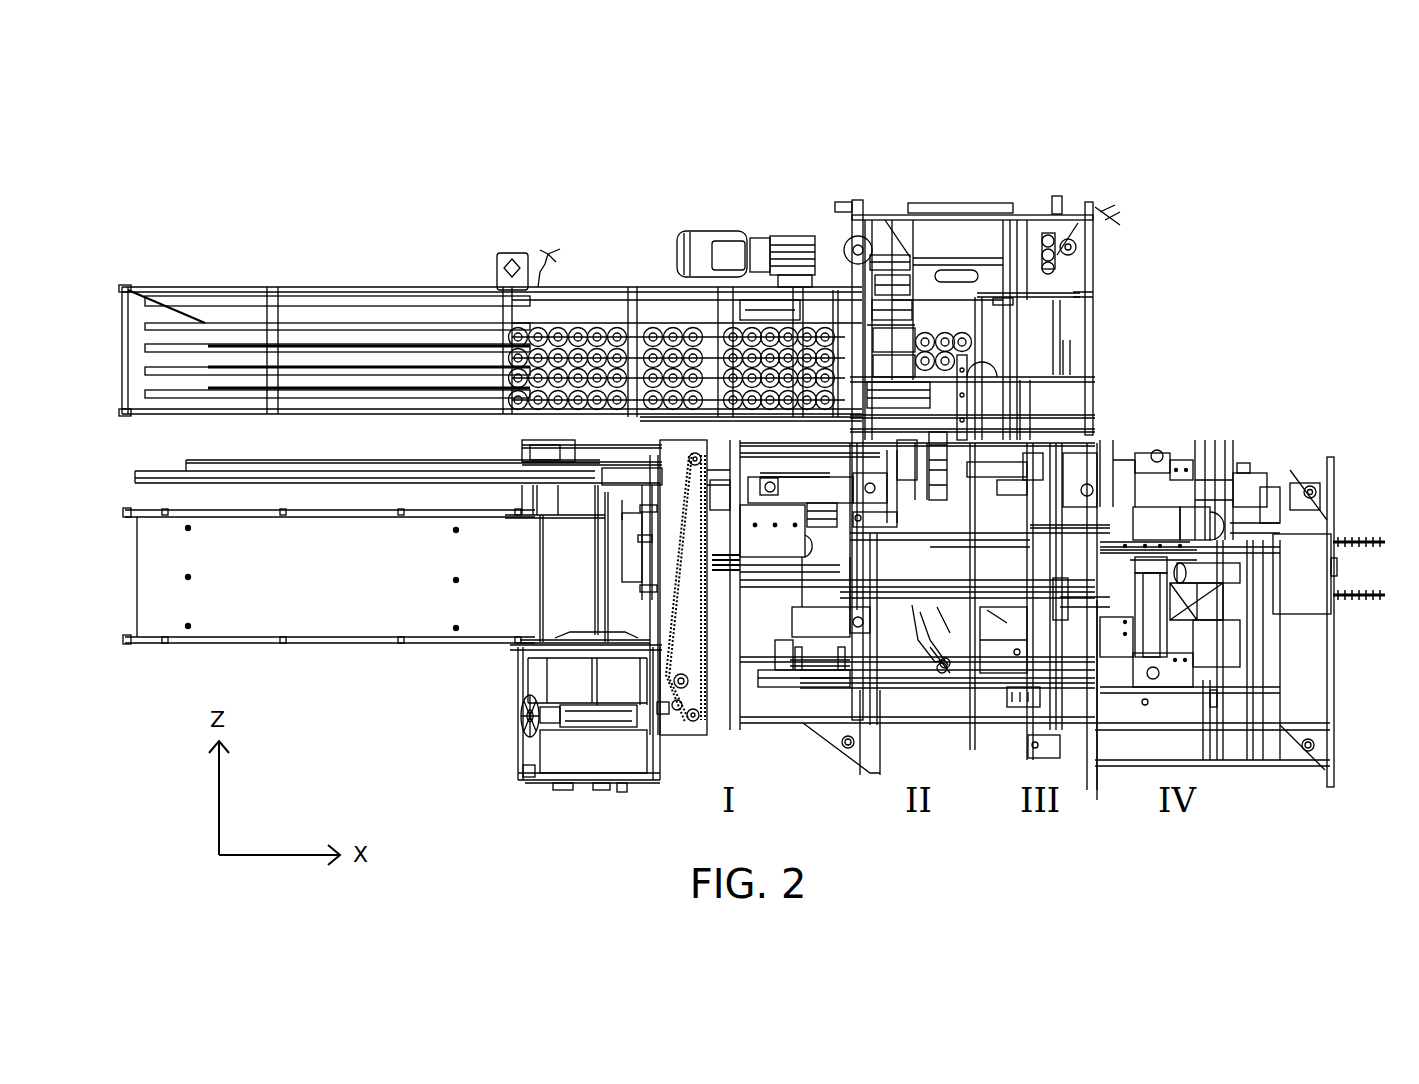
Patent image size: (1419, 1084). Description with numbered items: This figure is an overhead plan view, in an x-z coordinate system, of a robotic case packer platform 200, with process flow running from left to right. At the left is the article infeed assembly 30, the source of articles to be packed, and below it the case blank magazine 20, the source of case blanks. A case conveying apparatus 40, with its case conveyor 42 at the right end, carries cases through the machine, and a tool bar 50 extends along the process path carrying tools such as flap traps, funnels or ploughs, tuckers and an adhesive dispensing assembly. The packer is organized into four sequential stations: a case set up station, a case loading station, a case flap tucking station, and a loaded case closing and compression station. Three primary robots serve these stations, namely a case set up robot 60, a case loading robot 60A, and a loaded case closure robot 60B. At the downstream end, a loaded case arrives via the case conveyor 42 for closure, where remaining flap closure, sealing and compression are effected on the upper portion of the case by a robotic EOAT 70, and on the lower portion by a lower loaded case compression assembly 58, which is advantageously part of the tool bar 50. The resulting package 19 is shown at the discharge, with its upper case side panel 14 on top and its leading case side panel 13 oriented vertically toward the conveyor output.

The article infeed assembly 30 is at (383, 237).
The case packer platform 200 is at (1294, 225).
The case blank magazine 20 is at (682, 745).
The tool bar 50 is at (773, 652).
The case set up robot 60 is at (804, 551).
The case loading robot 60A is at (948, 436).
The loaded case closure robot 60B is at (1201, 523).
The package 19 is at (1308, 521).
The case conveying apparatus 40 is at (1377, 636).
The upper case side panel 14 is at (1315, 586).
The case conveyor 42 is at (1356, 538).
The leading case side panel 13 is at (1337, 567).
The lower loaded case compression assembly 58 is at (1223, 628).
The robotic EOAT 70 is at (1207, 632).